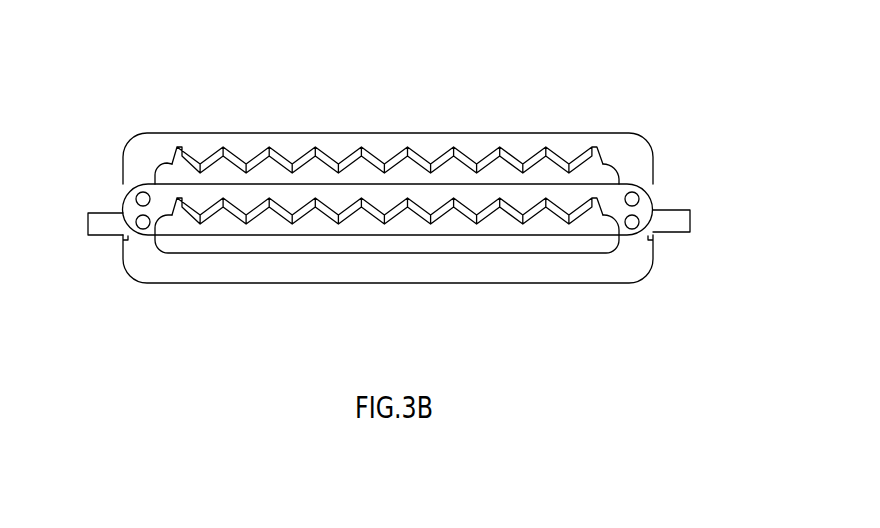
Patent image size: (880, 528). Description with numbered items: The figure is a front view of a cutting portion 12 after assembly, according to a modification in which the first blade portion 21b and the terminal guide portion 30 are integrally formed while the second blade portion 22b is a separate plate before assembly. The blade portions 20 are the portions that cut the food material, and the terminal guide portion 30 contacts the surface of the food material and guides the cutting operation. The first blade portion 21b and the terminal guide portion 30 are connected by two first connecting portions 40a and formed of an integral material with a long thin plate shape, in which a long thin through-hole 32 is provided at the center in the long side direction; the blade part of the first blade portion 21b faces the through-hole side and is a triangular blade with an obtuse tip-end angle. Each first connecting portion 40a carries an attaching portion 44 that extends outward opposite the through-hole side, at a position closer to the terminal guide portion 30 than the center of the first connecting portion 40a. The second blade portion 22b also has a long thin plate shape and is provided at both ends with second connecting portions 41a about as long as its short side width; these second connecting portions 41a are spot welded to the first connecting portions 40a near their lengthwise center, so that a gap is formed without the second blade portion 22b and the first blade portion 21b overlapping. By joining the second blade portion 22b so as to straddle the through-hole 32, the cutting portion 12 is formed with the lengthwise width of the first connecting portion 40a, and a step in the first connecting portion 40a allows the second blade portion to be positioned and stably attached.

The cutting portion 12 is at (697, 370).
The blade portions 20 is at (298, 142).
The first blade portion 21b is at (467, 193).
The second blade portion 22b is at (523, 145).
The terminal guide portion 30 is at (535, 268).
The through-hole 32 is at (303, 243).
The first connecting portions 40a is at (137, 243).
The second connecting portions 41a is at (137, 177).
The attaching portion 44 is at (89, 225).